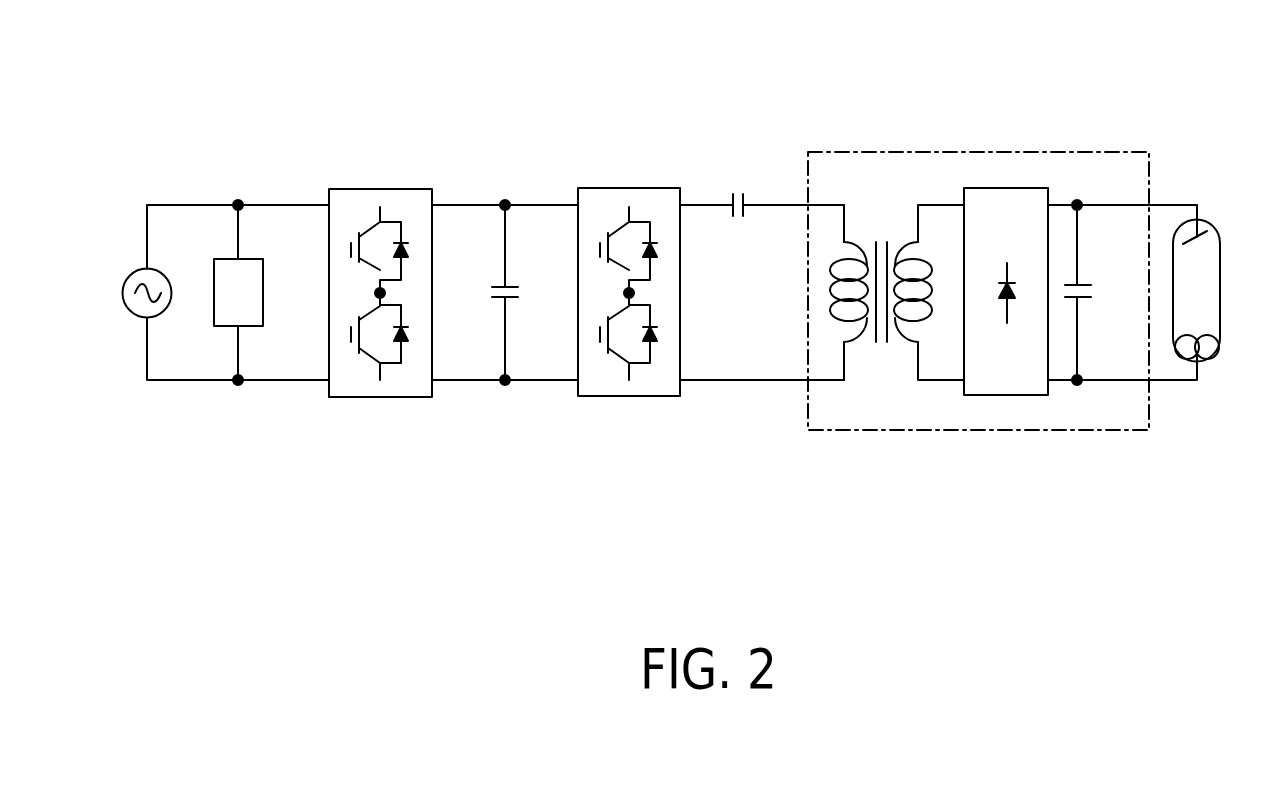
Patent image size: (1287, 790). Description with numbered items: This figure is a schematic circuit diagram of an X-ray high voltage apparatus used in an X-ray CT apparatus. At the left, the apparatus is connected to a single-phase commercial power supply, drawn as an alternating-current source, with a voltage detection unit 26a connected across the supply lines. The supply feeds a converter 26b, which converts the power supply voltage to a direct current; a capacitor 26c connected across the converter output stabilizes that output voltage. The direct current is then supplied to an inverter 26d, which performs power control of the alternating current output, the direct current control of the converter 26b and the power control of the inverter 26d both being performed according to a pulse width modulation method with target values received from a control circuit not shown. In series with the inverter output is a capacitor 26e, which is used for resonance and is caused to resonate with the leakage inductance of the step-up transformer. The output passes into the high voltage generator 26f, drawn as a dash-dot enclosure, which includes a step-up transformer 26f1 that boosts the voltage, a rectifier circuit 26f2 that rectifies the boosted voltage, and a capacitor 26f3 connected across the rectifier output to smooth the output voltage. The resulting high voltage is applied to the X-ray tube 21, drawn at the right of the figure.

The voltage detection unit 26a is at (252, 247).
The converter 26b is at (379, 179).
The capacitor 26c is at (522, 278).
The inverter 26d is at (627, 179).
The capacitor 26e is at (739, 179).
The high voltage generator 26f is at (1122, 150).
The step-up transformer 26f1 is at (882, 215).
The rectifier circuit 26f2 is at (1007, 188).
The capacitor 26f3 is at (1097, 279).
The X-ray tube 21 is at (1220, 289).